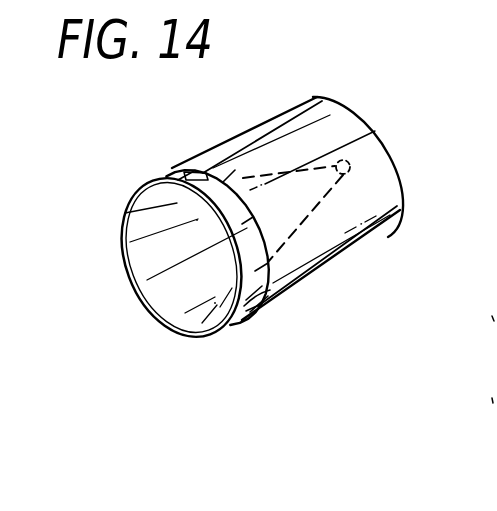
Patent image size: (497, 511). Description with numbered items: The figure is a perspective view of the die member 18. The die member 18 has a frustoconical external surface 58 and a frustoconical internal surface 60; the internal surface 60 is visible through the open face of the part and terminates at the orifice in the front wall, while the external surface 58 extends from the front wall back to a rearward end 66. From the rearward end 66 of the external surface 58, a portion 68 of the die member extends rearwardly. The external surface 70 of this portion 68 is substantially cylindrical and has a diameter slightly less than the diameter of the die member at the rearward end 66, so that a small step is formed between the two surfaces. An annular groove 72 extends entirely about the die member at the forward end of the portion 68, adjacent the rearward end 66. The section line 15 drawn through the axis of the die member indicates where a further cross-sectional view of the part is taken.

The section line 15- 15 is at (118, 298).
The die member 18 is at (352, 270).
The external surface 58 is at (385, 224).
The internal surface 60 is at (182, 310).
The rearward end 66 is at (223, 182).
The portion 68 is at (155, 173).
The external surface 70 is at (252, 315).
The annular groove 72 is at (186, 168).